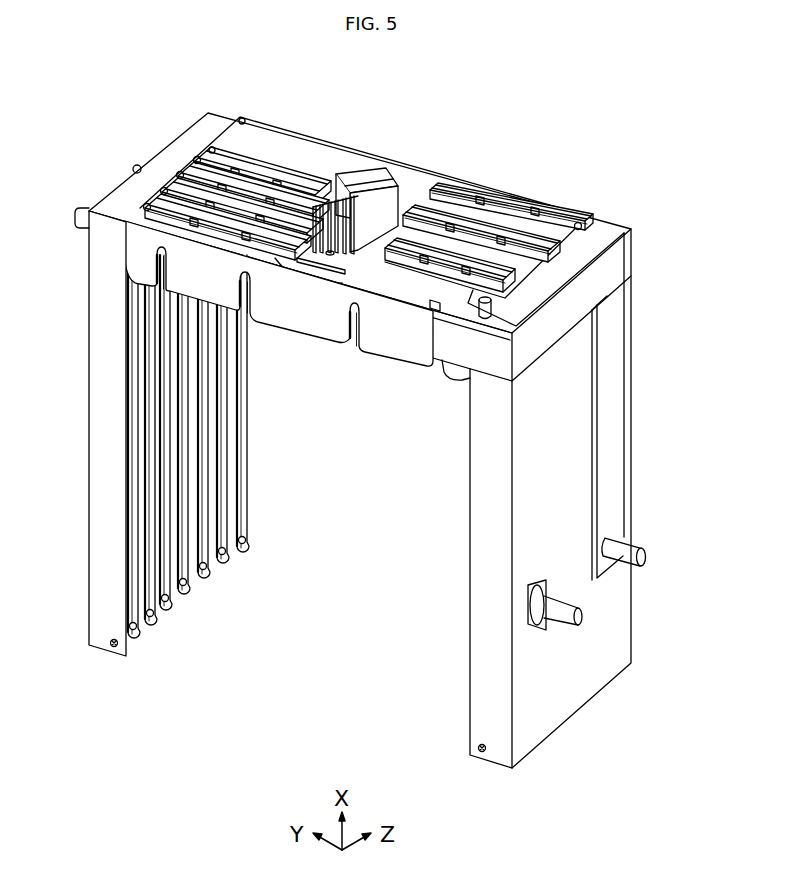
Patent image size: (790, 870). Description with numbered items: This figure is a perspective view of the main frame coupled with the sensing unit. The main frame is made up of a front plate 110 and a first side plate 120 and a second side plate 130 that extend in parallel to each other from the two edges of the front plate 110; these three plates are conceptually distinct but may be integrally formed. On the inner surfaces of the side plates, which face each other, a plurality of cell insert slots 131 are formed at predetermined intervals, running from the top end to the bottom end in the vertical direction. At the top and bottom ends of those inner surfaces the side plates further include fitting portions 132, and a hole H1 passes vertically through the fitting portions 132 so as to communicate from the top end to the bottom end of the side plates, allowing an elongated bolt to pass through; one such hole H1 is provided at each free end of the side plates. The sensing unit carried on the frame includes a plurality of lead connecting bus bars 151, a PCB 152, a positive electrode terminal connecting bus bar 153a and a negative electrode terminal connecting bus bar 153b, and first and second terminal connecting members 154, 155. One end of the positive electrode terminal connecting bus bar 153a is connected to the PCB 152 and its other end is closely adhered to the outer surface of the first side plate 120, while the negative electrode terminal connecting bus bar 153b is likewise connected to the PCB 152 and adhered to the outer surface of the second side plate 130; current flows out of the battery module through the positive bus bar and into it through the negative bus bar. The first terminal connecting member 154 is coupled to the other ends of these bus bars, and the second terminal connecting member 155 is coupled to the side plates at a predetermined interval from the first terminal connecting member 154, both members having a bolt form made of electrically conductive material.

The front plate 110 is at (610, 229).
The first side plate 120 is at (622, 600).
The second side plate 130 is at (231, 453).
The cell insert slots 131 is at (204, 475).
The fitting portions 132 is at (236, 553).
The lead connecting bus bars 151 is at (255, 192).
The PCB 152 is at (421, 185).
The positive electrode terminal connecting bus bar 153a is at (615, 344).
The negative electrode terminal connecting bus bar 153b is at (514, 203).
The first terminal connecting member 154 is at (137, 165).
The second terminal connecting member 155 is at (78, 214).
The hole H1 is at (114, 647).